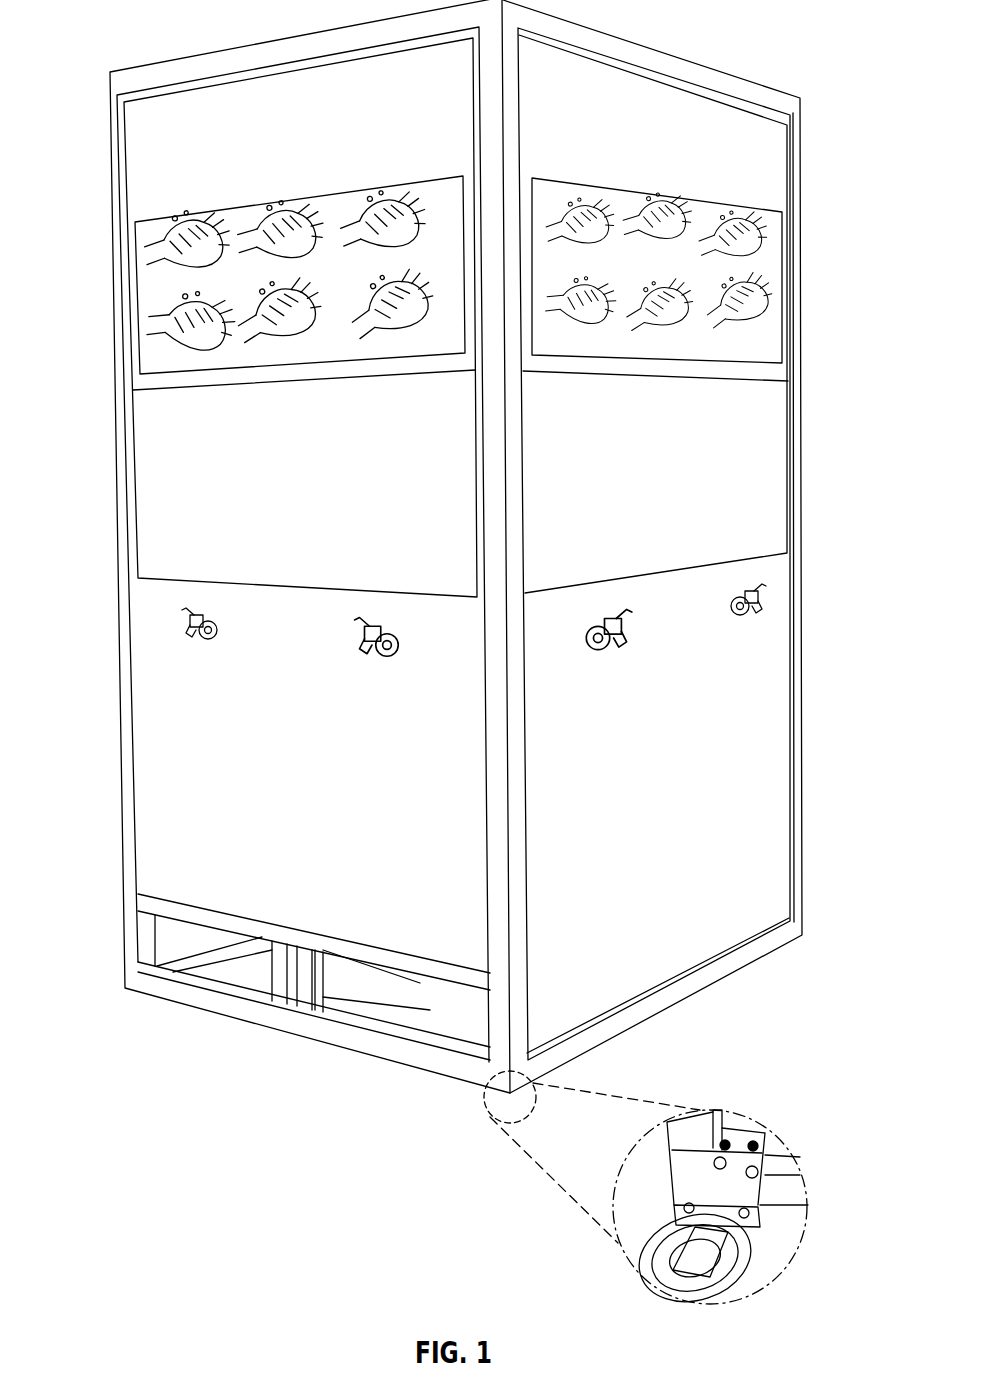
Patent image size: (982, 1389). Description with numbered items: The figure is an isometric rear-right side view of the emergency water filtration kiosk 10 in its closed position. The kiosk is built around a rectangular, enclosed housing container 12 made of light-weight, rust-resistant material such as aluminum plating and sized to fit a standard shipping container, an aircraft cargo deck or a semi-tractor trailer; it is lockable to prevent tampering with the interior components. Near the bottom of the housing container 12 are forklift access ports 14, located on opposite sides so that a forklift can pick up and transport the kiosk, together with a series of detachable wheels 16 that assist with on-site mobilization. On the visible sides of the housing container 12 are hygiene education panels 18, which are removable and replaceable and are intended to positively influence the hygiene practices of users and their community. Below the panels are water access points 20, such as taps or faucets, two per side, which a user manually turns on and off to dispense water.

The emergency water filtration kiosk 10 is at (118, 40).
The enclosed housing container 12 is at (603, 53).
The forklift access ports 14 is at (192, 962).
The detachable wheels 16 is at (645, 1278).
The hygiene education panel 18 is at (755, 293).
The water access points 20 is at (187, 630).